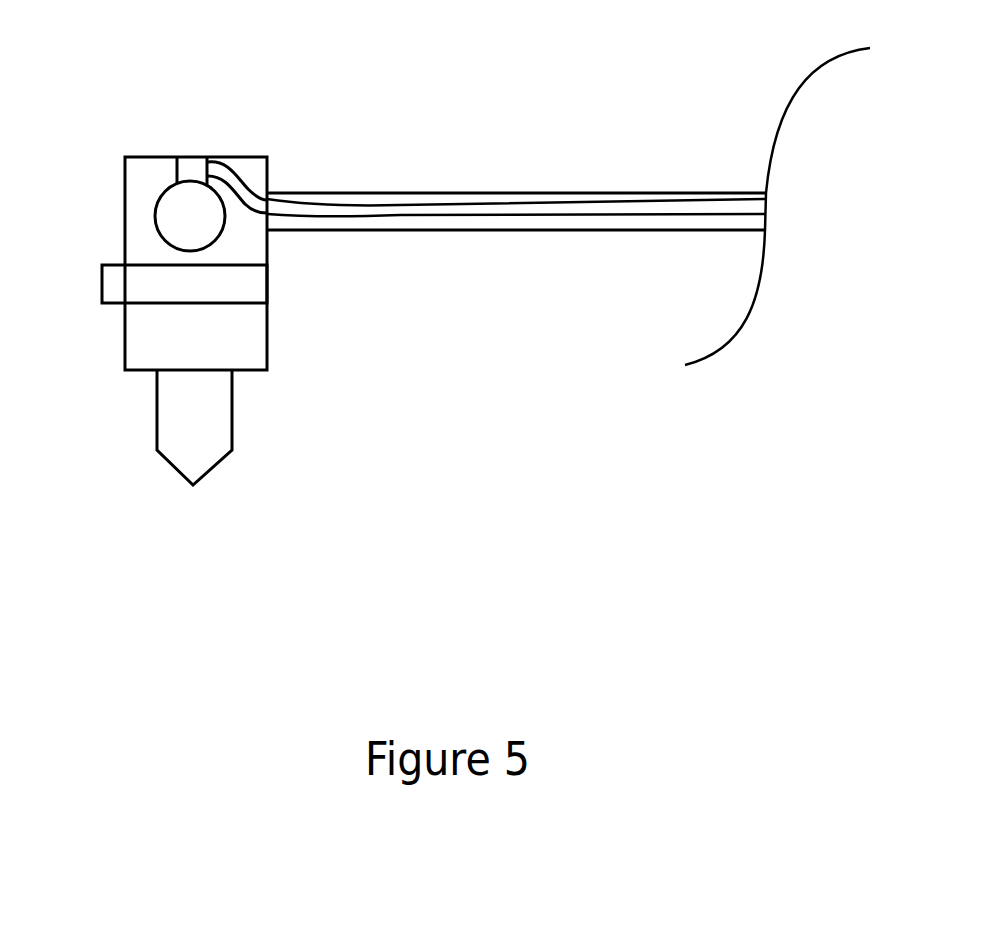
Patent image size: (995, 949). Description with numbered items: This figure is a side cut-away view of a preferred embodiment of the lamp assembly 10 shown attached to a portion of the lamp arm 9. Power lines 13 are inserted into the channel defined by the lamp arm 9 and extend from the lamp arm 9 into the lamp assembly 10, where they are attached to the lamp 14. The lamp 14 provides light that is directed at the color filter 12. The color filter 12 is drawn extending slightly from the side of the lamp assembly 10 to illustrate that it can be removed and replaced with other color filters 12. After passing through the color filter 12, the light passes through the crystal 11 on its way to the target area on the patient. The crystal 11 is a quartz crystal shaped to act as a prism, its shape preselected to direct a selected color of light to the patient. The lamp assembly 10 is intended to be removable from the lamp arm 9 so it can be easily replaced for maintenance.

The lamp arm 9 is at (577, 193).
The lamp assembly 10 is at (258, 157).
The crystal 11 is at (213, 467).
The color filter 12 is at (268, 285).
The power lines 13 is at (441, 215).
The lamp 14 is at (155, 217).